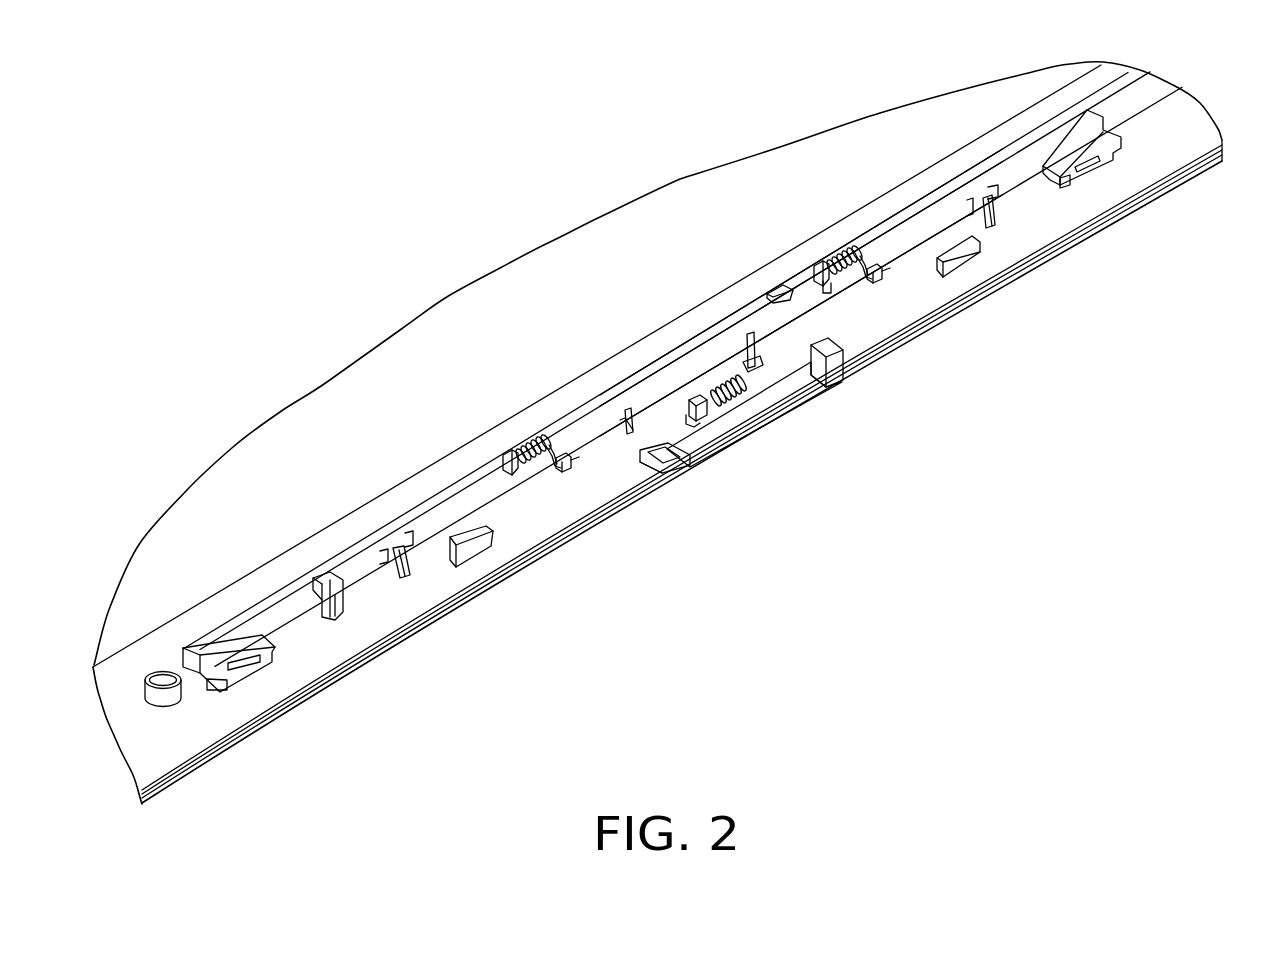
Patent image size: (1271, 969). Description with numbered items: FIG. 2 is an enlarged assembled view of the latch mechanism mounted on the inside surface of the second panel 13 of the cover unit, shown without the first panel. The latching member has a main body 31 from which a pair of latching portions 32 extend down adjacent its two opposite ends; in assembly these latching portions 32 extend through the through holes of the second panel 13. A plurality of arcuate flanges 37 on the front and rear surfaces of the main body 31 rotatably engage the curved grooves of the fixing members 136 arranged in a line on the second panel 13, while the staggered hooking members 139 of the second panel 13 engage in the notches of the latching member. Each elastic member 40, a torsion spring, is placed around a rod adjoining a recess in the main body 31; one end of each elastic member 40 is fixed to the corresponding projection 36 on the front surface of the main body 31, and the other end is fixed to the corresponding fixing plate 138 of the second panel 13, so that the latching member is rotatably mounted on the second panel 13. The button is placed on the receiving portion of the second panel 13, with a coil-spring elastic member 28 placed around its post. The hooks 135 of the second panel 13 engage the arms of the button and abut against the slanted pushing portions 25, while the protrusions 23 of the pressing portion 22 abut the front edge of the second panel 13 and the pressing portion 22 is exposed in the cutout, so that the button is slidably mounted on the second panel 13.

The second panel 13 is at (162, 745).
The main body 31 is at (813, 303).
The latching portion 32 is at (240, 673).
The hooking member 139 is at (332, 614).
The fixing plate 138 is at (512, 475).
The elastic member 40 is at (542, 462).
The projection 36 is at (564, 472).
The protrusion 23 is at (667, 460).
The pressing portion 22 is at (752, 408).
The elastic member 28 is at (763, 383).
The hook 135 is at (706, 400).
The pushing portion 25 is at (697, 418).
The fixing member 136 is at (988, 226).
The arcuate flange 37 is at (995, 193).